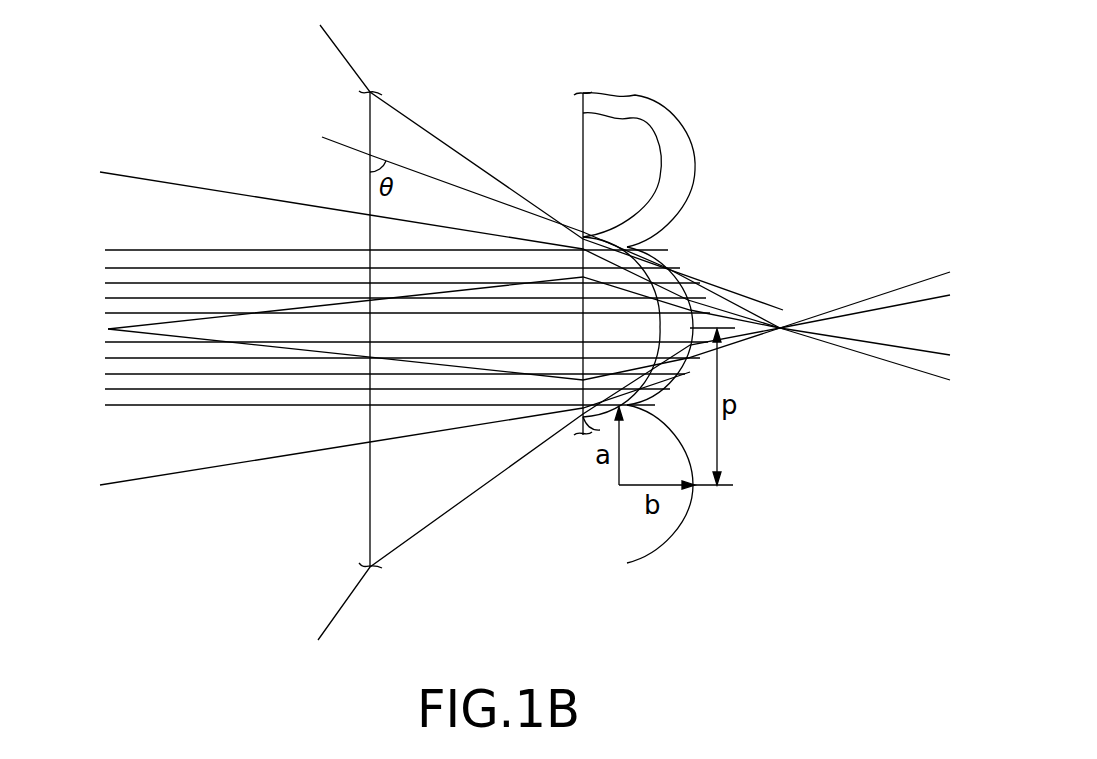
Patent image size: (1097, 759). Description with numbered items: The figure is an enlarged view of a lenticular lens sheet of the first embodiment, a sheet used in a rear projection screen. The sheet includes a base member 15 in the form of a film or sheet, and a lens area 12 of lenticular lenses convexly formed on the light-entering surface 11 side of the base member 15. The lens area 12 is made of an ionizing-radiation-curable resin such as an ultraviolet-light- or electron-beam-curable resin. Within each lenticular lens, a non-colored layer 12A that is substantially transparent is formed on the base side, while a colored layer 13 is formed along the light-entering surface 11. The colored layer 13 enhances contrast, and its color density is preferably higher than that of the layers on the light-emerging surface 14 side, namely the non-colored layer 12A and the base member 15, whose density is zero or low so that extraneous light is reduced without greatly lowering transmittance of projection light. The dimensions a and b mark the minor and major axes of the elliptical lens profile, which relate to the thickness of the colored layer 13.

The light-entering surface 11 is at (688, 208).
The lens area 12 is at (790, 95).
The non-colored layer 12A is at (628, 182).
The colored layer 13 is at (680, 133).
The light-emerging surface 14 is at (370, 186).
The base member 15 is at (370, 512).